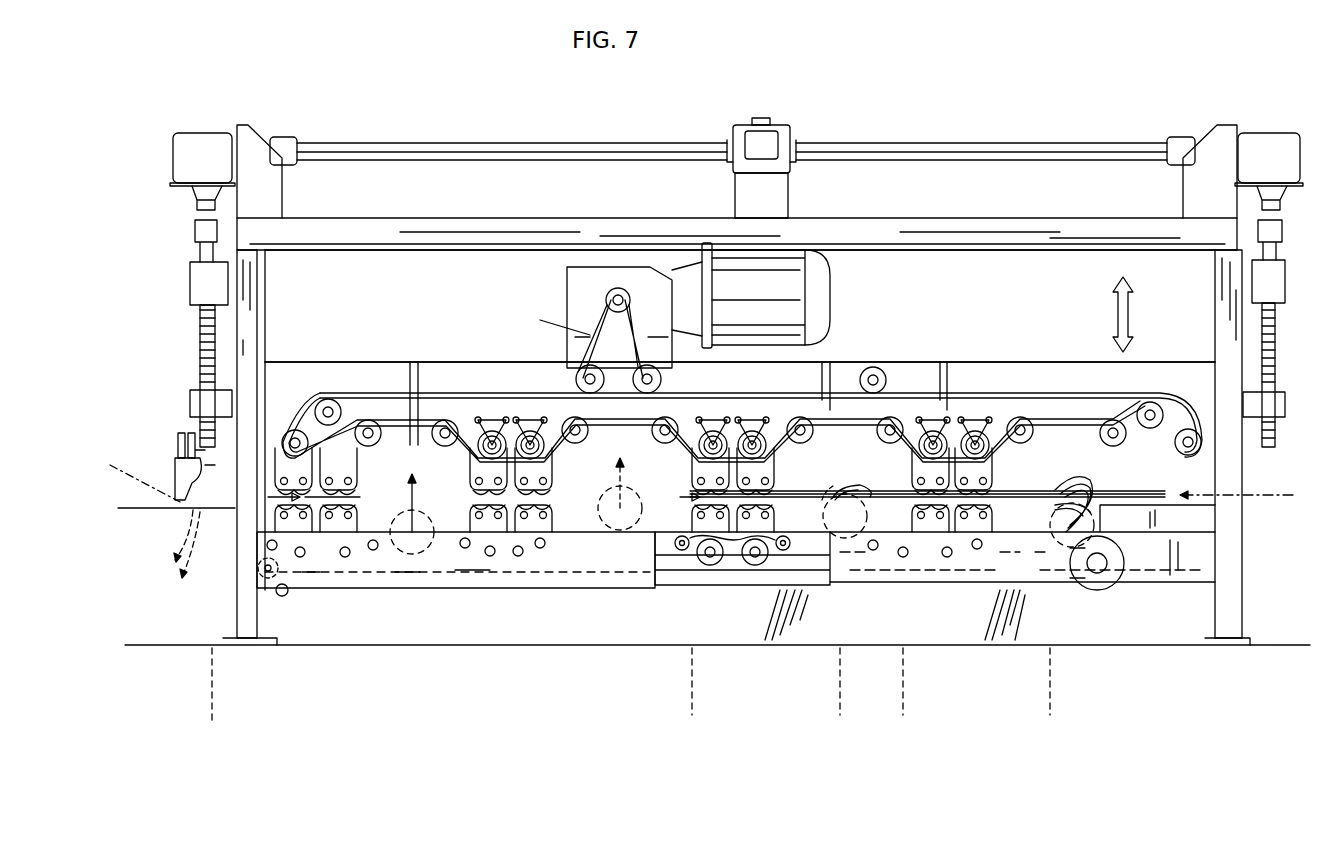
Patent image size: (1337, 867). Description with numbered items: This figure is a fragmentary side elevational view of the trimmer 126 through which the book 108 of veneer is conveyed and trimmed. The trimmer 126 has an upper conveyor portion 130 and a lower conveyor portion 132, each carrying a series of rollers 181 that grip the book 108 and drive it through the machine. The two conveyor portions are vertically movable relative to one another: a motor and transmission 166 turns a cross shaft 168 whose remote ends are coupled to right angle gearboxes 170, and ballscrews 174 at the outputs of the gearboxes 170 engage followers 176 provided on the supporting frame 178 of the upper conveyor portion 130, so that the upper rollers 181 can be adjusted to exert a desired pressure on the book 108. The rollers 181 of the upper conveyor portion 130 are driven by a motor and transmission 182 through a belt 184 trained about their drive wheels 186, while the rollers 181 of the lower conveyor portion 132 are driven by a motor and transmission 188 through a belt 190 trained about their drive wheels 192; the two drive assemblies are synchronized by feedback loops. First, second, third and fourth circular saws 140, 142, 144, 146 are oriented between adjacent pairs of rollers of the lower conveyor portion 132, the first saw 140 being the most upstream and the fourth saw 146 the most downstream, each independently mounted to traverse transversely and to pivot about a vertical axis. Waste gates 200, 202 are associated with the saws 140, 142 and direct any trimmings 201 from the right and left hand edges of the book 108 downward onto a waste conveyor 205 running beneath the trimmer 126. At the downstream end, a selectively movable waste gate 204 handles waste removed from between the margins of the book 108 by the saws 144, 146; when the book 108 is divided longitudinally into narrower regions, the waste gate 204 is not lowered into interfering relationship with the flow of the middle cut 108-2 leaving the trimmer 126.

The book 108 is at (1050, 490).
The middle cut 108-2 is at (178, 578).
The trimmer 126 is at (913, 102).
The upper conveyor portion 130 is at (460, 340).
The lower conveyor portion 132 is at (489, 597).
The first circular saw 140 is at (1085, 488).
The second circular saw 142 is at (882, 466).
The third circular saw 144 is at (633, 492).
The fourth circular saw 146 is at (425, 500).
The motor and transmission 166 is at (775, 128).
The cross shaft 168 is at (488, 148).
The right angle gearbox 170 is at (213, 128).
The ballscrew 174 is at (200, 343).
The follower 176 is at (195, 403).
The supporting frame 178 is at (1020, 362).
The rollers 181 is at (340, 497).
The motor and transmission 182 is at (690, 240).
The belt 184 is at (600, 332).
The drive wheels 186 is at (296, 440).
The motor and transmission 188 is at (1115, 592).
The belt 190 is at (700, 560).
The drive wheels 192 is at (750, 566).
The waste gate 200 is at (1072, 478).
The trimmings 201 is at (775, 620).
The waste gate 202 is at (834, 478).
The waste gate 204 is at (175, 473).
The waste conveyor 205 is at (196, 648).